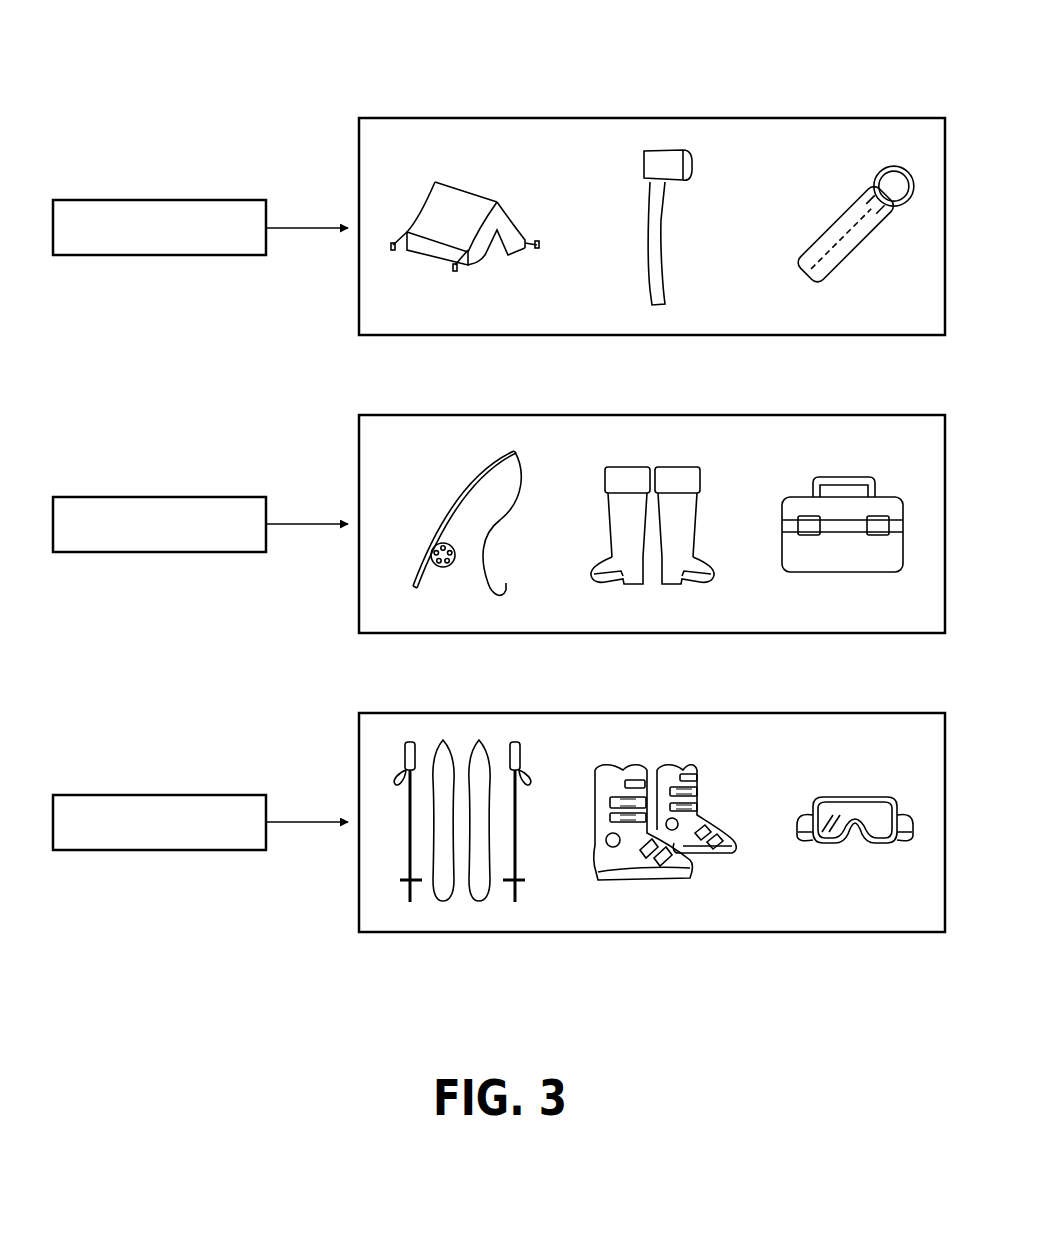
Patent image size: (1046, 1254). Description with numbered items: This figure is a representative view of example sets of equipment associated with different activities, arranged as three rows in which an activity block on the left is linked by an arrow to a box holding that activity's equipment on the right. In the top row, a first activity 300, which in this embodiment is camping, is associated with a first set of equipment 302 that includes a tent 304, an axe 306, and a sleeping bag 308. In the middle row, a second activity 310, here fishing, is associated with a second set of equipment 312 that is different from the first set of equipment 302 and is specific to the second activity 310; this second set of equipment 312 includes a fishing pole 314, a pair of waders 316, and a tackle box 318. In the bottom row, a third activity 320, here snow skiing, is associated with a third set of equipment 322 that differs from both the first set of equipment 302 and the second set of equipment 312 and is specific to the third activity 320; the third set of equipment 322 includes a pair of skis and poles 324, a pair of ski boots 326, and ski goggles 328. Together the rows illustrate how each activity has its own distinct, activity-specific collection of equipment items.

The first activity 300 is at (170, 199).
The first set of equipment 302 is at (358, 170).
The tent 304 is at (522, 204).
The axe 306 is at (661, 132).
The sleeping bag 308 is at (823, 198).
The second activity 310 is at (127, 497).
The second set of equipment 312 is at (358, 582).
The fishing pole 314 is at (479, 446).
The pair of waders 316 is at (660, 442).
The tackle box 318 is at (836, 454).
The third activity 320 is at (170, 795).
The third set of equipment 322 is at (358, 768).
The pair of skis and poles 324 is at (460, 916).
The pair of ski boots 326 is at (644, 744).
The ski goggles 328 is at (861, 774).